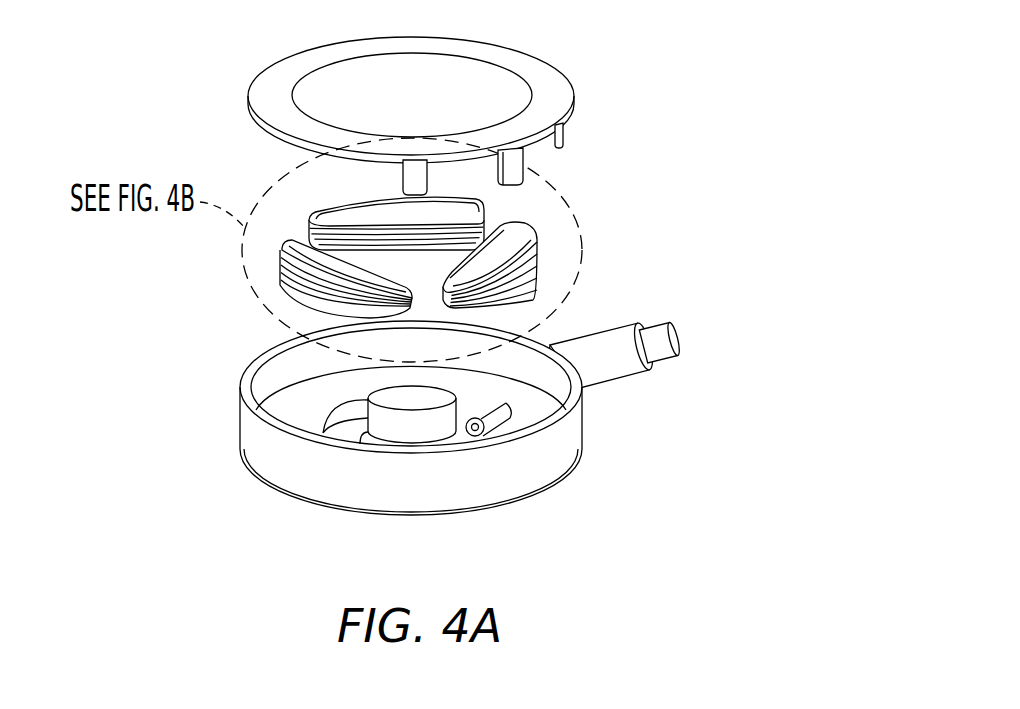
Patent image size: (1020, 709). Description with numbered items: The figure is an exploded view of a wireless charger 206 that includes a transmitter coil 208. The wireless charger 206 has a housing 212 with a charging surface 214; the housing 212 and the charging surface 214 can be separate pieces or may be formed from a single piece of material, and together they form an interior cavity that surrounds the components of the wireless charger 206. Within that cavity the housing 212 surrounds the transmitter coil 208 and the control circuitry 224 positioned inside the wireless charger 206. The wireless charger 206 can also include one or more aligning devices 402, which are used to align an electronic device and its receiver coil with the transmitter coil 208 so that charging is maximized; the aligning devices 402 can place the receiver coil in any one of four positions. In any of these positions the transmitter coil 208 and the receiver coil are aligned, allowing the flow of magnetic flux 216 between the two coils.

The wireless charger 206 is at (634, 123).
The transmitter coil 208 is at (280, 270).
The housing 212 is at (575, 433).
The charging surface 214 is at (540, 88).
The magnetic flux 216 is at (588, 350).
The control circuitry 224 is at (490, 430).
The aligning devices 402 is at (397, 433).